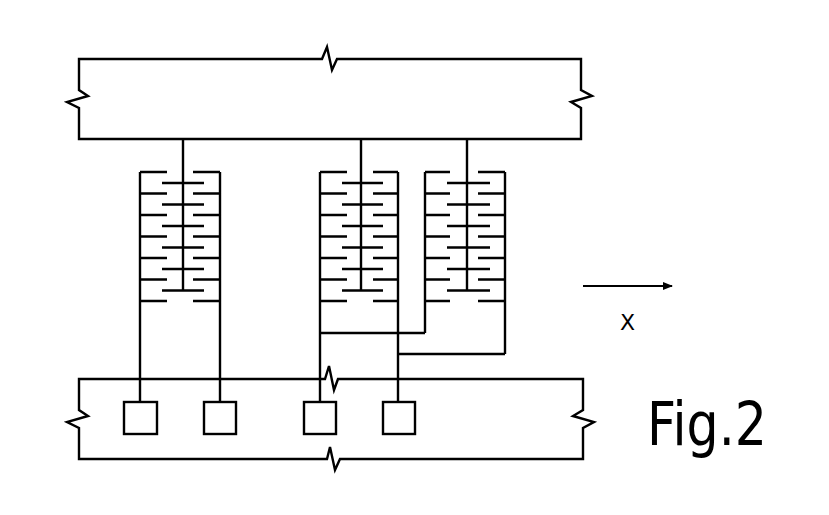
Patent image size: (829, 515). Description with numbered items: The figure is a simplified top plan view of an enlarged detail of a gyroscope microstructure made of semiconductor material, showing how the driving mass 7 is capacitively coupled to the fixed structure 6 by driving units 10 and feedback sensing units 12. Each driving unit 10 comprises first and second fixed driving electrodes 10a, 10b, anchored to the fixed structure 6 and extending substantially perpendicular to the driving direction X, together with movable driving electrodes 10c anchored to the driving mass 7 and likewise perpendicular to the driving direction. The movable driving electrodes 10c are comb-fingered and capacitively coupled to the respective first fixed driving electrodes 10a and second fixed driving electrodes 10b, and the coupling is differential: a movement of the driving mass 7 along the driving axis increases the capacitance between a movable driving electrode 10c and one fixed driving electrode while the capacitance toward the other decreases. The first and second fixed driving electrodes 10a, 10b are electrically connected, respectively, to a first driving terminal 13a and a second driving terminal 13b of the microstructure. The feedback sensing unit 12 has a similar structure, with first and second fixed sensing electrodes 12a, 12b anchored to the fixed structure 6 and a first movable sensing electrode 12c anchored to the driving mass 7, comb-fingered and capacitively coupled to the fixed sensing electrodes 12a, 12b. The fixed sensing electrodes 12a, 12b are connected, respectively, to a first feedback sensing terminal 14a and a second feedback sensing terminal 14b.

The driving mass 7 is at (465, 62).
The fixed structure 6 is at (520, 455).
The feedback sensing unit 12 is at (159, 270).
The first fixed sensing electrode 12a is at (140, 347).
The second fixed sensing electrode 12b is at (220, 268).
The first movable sensing electrode 12c is at (183, 158).
The driving unit 10 is at (434, 270).
The first fixed driving electrode 10a is at (425, 312).
The second fixed driving electrode 10b is at (505, 295).
The movable driving electrode 10c is at (467, 153).
The first driving terminal 13a is at (315, 436).
The second driving terminal 13b is at (400, 436).
The first feedback sensing terminal 14a is at (135, 436).
The second feedback sensing terminal 14b is at (222, 436).